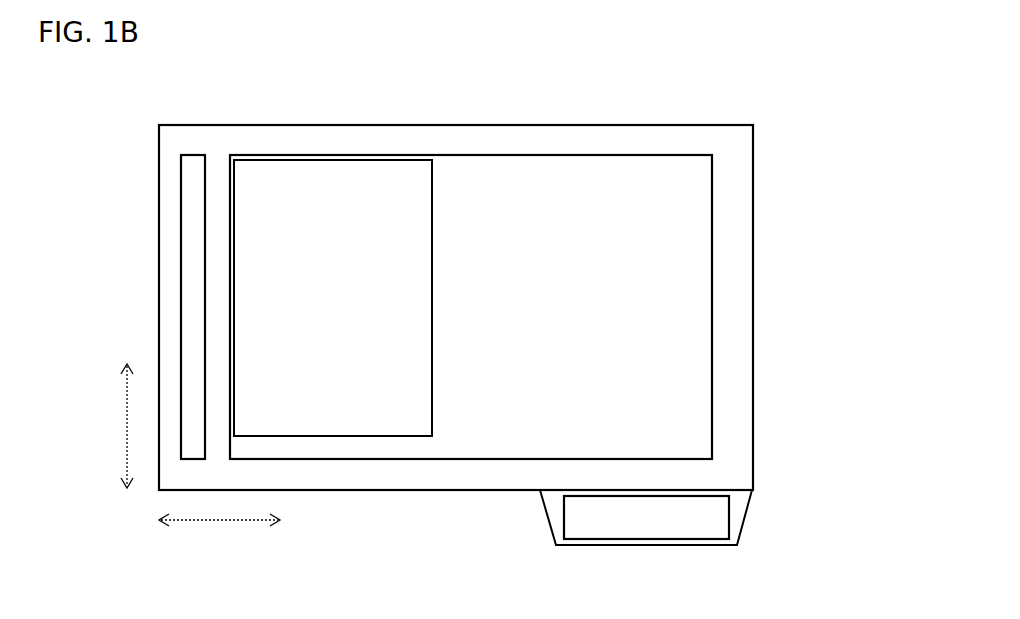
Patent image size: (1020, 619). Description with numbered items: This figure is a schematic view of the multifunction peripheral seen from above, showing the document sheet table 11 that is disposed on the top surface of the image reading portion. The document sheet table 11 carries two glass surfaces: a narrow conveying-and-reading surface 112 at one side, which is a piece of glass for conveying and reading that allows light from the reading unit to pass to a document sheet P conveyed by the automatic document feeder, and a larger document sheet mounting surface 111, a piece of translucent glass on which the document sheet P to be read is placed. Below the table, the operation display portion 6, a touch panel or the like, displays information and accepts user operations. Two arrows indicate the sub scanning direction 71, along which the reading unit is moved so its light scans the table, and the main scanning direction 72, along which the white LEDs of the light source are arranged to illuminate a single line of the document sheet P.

The document sheet table 11 is at (250, 124).
The conveying-and-reading surface 112 is at (193, 155).
The document sheet mounting surface 111 is at (303, 155).
The document sheet P is at (432, 215).
The operation display portion 6 is at (729, 517).
The main scanning direction 72 is at (125, 420).
The sub scanning direction 71 is at (222, 520).